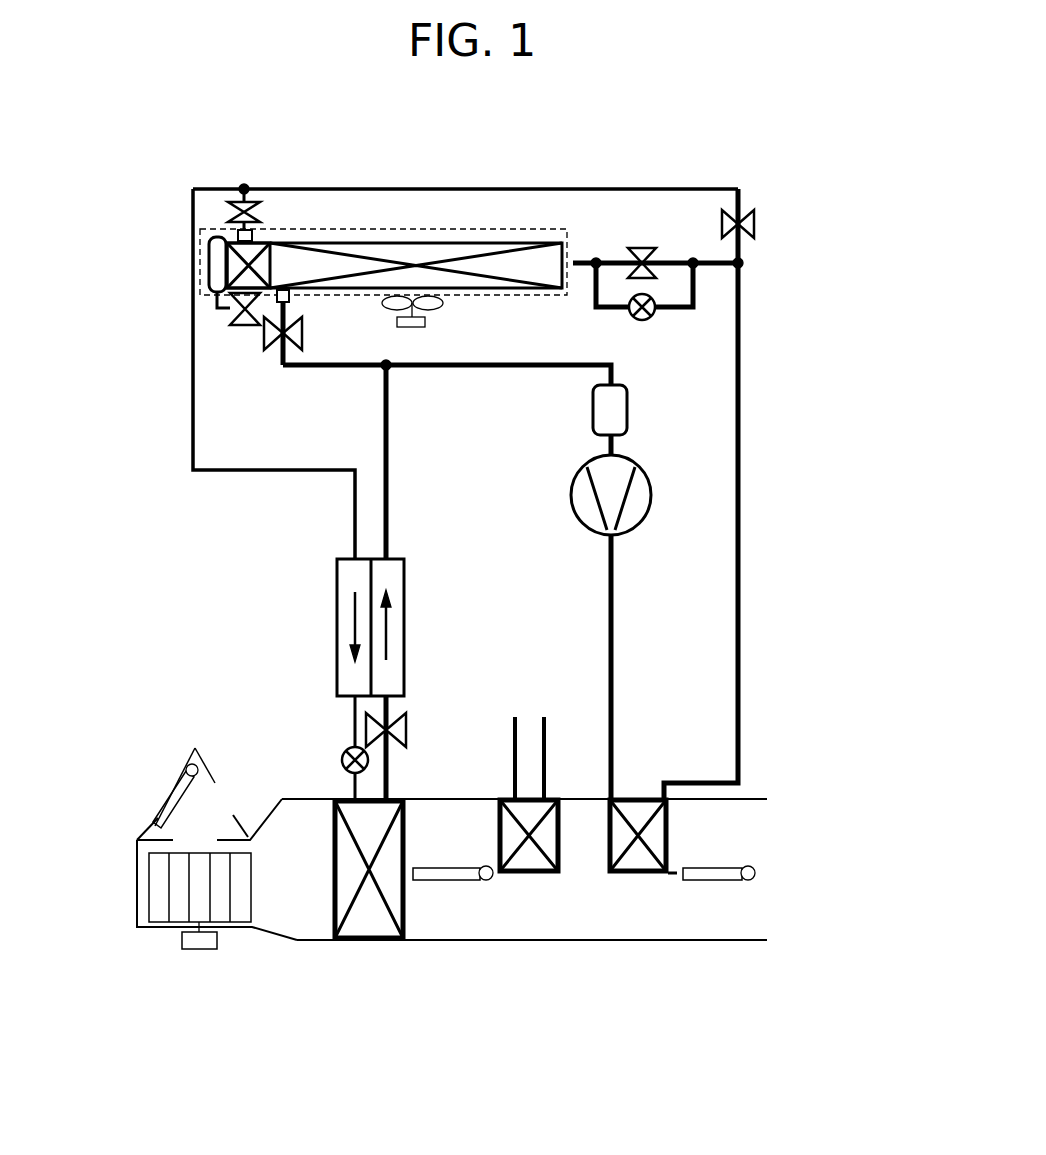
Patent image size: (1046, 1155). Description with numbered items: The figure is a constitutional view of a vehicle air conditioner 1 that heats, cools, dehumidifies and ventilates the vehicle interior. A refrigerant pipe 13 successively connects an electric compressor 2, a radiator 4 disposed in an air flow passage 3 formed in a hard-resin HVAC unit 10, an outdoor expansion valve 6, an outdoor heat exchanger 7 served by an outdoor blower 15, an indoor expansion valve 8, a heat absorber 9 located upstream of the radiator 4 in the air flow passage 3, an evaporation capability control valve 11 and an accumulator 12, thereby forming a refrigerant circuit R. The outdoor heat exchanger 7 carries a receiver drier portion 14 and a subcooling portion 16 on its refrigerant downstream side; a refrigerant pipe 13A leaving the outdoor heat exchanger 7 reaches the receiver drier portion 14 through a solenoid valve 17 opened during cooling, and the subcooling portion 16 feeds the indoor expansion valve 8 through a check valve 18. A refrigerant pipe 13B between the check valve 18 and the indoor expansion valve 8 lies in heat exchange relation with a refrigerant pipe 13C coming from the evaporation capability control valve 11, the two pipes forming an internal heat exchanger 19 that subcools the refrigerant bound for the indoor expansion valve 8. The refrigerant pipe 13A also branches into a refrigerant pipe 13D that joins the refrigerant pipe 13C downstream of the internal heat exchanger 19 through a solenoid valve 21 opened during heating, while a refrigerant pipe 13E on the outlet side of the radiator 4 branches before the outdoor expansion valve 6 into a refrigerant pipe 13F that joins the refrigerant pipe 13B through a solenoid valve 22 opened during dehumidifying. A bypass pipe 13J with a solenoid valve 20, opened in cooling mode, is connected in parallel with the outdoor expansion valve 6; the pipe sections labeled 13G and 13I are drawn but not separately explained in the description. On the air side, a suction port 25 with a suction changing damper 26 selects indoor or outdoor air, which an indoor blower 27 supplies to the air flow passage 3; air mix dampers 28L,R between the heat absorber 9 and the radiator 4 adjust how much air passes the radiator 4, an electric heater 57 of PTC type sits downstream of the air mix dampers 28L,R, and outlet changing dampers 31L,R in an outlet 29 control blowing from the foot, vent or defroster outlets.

The vehicle air conditioner 1 is at (766, 438).
The compressor 2 is at (571, 494).
The air flow passage 3 is at (428, 820).
The radiator 4 is at (670, 829).
The outdoor expansion valve 6 is at (642, 322).
The outdoor heat exchanger 7 is at (403, 242).
The indoor expansion valve 8 is at (342, 756).
The heat absorber 9 is at (333, 870).
The HVAC unit 10 is at (473, 792).
The evaporation capability control valve 11 is at (406, 730).
The accumulator 12 is at (628, 410).
The refrigerant pipe 13 is at (752, 345).
The refrigerant pipe 13A is at (290, 297).
The refrigerant pipe 13B is at (353, 518).
The refrigerant pipe 13C is at (389, 430).
The refrigerant pipe 13D is at (320, 368).
The refrigerant pipe 13E is at (741, 497).
The refrigerant pipe 13F is at (503, 188).
The refrigerant pipe 13G is at (608, 575).
The bypass pipe 13I is at (590, 268).
The bypass pipe 13J is at (612, 262).
The receiver drier portion 14 is at (208, 265).
The outdoor blower 15 is at (445, 303).
The subcooling portion 16 is at (258, 242).
The solenoid valve 17 is at (247, 326).
The check valve 18 is at (233, 212).
The internal heat exchanger 19 is at (336, 601).
The solenoid valve 20 is at (645, 248).
The solenoid valve 21 is at (303, 333).
The solenoid valve 22 is at (755, 224).
The suction port 25 is at (225, 800).
The suction changing damper 26 is at (170, 787).
The indoor blower 27 is at (148, 881).
The air mix dampers 28L,R is at (452, 881).
The outlet 29 is at (745, 848).
The outlet changing dampers 31L,R is at (710, 881).
The electric heater 57 is at (560, 843).
The refrigerant circuit R is at (238, 572).